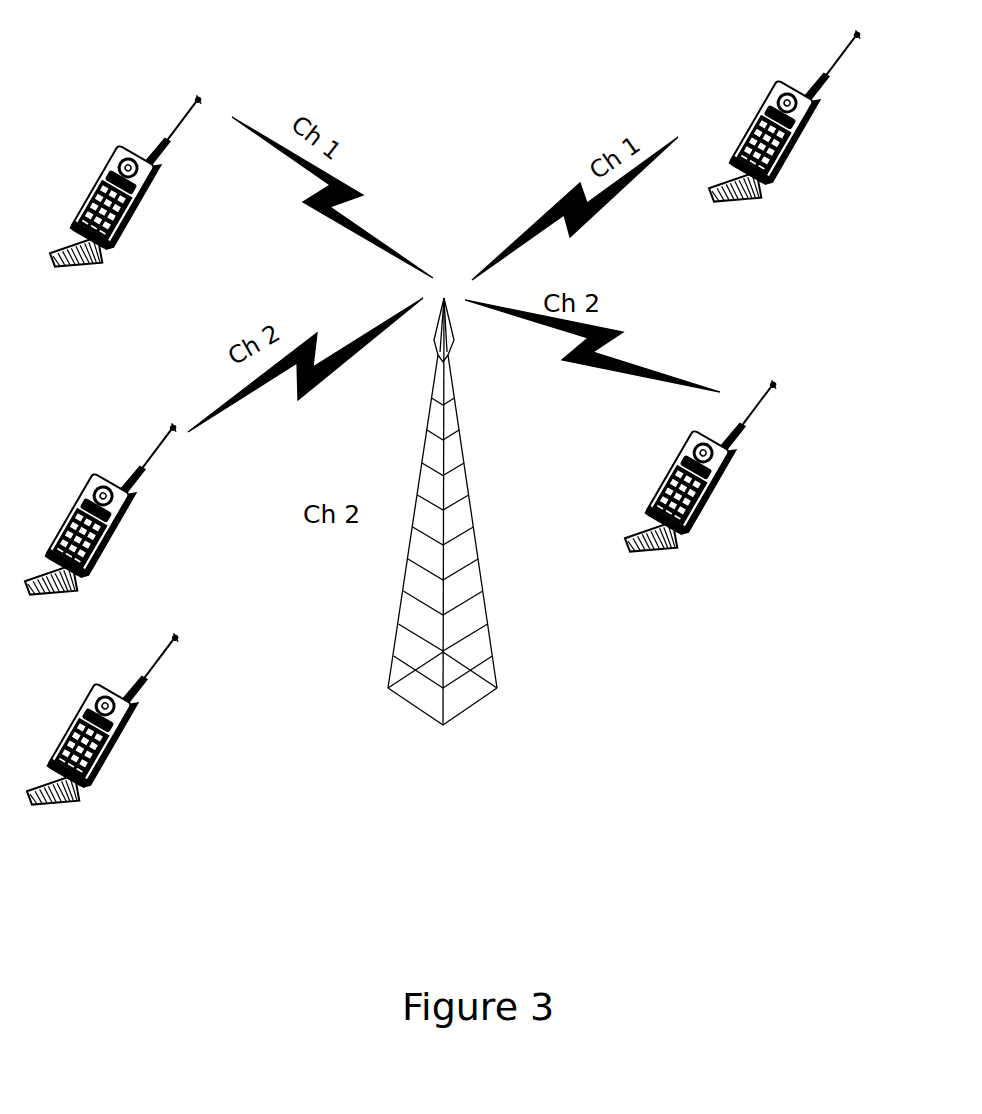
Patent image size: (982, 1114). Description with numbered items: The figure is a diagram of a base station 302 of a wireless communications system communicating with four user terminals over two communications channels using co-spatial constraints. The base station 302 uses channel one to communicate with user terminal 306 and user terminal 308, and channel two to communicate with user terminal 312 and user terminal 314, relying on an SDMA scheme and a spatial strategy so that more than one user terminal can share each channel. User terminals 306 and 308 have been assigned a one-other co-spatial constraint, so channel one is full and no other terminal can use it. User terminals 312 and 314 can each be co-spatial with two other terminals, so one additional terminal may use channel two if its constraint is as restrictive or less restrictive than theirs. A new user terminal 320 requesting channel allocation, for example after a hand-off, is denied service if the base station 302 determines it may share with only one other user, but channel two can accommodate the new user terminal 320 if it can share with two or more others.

The base station 302 is at (442, 530).
The user terminal 306 is at (783, 124).
The user terminal 308 is at (124, 189).
The user terminal 312 is at (699, 474).
The user terminal 314 is at (99, 508).
The new user terminal 320 is at (101, 723).